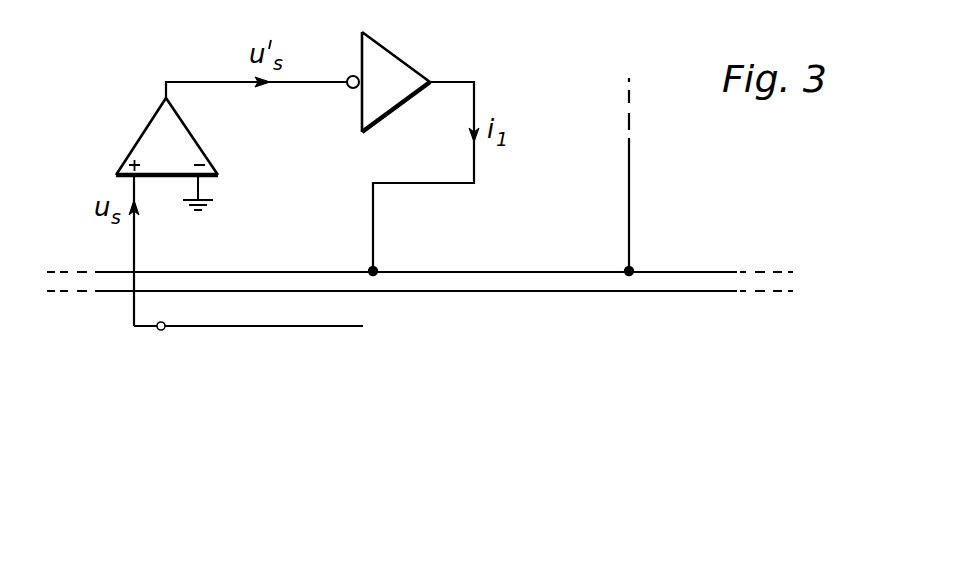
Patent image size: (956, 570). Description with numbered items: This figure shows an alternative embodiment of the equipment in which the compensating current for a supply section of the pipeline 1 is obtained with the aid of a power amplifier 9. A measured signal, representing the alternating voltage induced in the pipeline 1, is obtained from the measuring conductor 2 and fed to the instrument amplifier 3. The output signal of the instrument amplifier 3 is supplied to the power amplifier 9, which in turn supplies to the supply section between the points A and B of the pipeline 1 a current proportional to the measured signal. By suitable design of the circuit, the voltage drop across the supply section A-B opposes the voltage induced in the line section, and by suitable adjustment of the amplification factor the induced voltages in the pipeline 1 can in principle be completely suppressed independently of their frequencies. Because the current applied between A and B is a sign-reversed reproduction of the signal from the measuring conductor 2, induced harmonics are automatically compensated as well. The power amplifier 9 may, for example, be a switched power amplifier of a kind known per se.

The pipeline 1 is at (486, 280).
The measuring conductor 2 is at (290, 328).
The instrument amplifier 3 is at (198, 140).
The power amplifier 9 is at (396, 56).
The supply section end point A is at (377, 268).
The supply section end point B is at (633, 268).